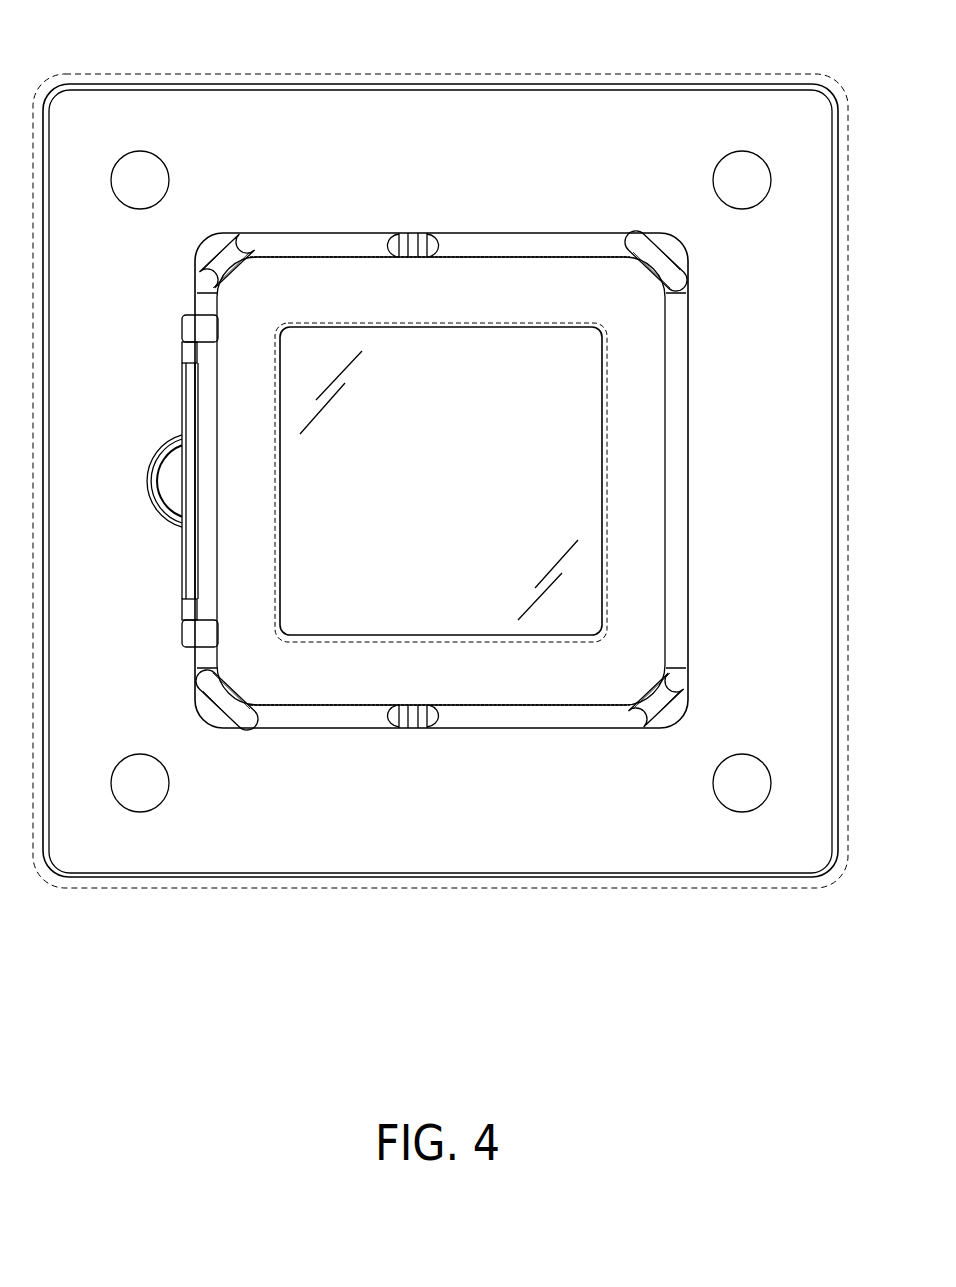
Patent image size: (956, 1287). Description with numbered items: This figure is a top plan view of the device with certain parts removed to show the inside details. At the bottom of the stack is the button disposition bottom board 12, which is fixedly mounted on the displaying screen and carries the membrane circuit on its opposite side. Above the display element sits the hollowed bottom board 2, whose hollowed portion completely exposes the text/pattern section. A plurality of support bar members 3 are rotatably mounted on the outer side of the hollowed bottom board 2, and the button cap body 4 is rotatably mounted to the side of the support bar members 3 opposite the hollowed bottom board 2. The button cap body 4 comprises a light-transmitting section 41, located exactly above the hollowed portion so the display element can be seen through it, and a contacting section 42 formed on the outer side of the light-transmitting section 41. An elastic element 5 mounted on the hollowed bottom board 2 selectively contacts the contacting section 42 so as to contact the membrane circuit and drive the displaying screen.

The button disposition bottom board 12 is at (767, 85).
The hollowed bottom board 2 is at (688, 587).
The support bar member 3 is at (220, 236).
The button cap body 4 is at (512, 481).
The light-transmitting section 41 is at (603, 447).
The contacting section 42 is at (665, 513).
The elastic element 5 is at (160, 520).